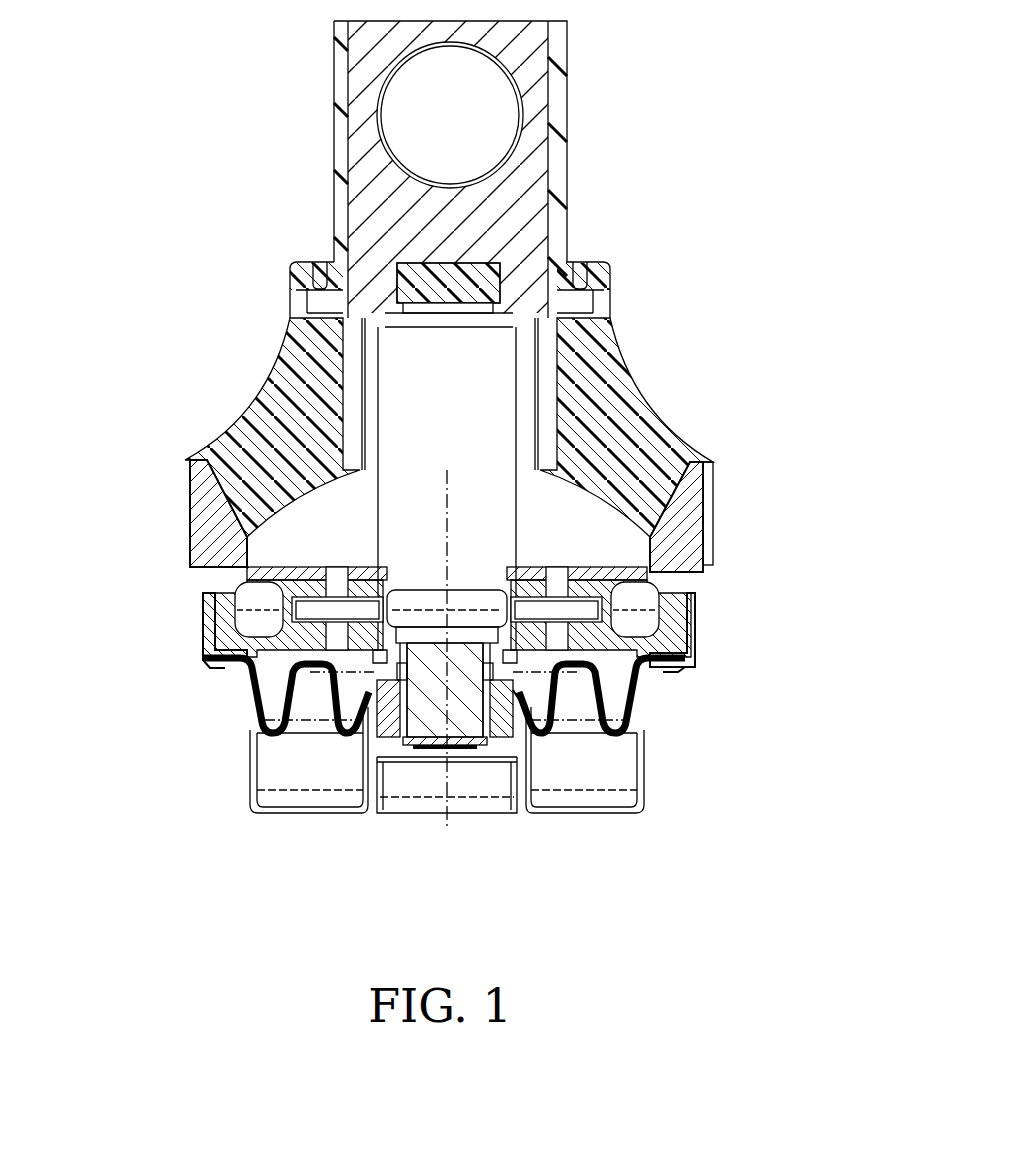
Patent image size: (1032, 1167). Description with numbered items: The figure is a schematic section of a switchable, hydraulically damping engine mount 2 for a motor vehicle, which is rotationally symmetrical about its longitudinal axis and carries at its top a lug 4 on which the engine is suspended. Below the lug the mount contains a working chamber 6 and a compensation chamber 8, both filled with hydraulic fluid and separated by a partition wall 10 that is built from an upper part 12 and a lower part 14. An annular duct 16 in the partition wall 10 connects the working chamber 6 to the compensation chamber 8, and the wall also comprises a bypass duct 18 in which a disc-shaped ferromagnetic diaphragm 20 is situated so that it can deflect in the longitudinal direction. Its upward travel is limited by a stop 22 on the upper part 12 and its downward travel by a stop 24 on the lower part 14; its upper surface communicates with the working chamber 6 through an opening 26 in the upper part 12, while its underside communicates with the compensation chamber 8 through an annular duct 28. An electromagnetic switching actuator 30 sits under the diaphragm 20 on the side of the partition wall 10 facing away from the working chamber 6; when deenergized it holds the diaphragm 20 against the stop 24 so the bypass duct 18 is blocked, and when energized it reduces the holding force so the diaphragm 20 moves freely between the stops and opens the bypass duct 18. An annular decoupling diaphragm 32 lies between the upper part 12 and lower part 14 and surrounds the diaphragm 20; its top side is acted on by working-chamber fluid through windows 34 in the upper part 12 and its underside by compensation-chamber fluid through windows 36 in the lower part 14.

The engine mount 2 is at (634, 239).
The lug 4 is at (497, 122).
The working chamber 6 is at (618, 545).
The compensation chamber 8 is at (643, 703).
The partition wall 10 is at (668, 630).
The upper part 12 is at (225, 572).
The lower part 14 is at (200, 645).
The annular duct 16 is at (200, 663).
The bypass duct 18 is at (427, 567).
The diaphragm 20 is at (462, 760).
The stop 22 is at (500, 560).
The stop 24 is at (535, 707).
The opening 26 is at (458, 577).
The annular duct 28 is at (502, 760).
The switching actuator 30 is at (390, 763).
The decoupling diaphragm 32 is at (255, 692).
The windows 34 is at (336, 640).
The windows 36 is at (320, 695).